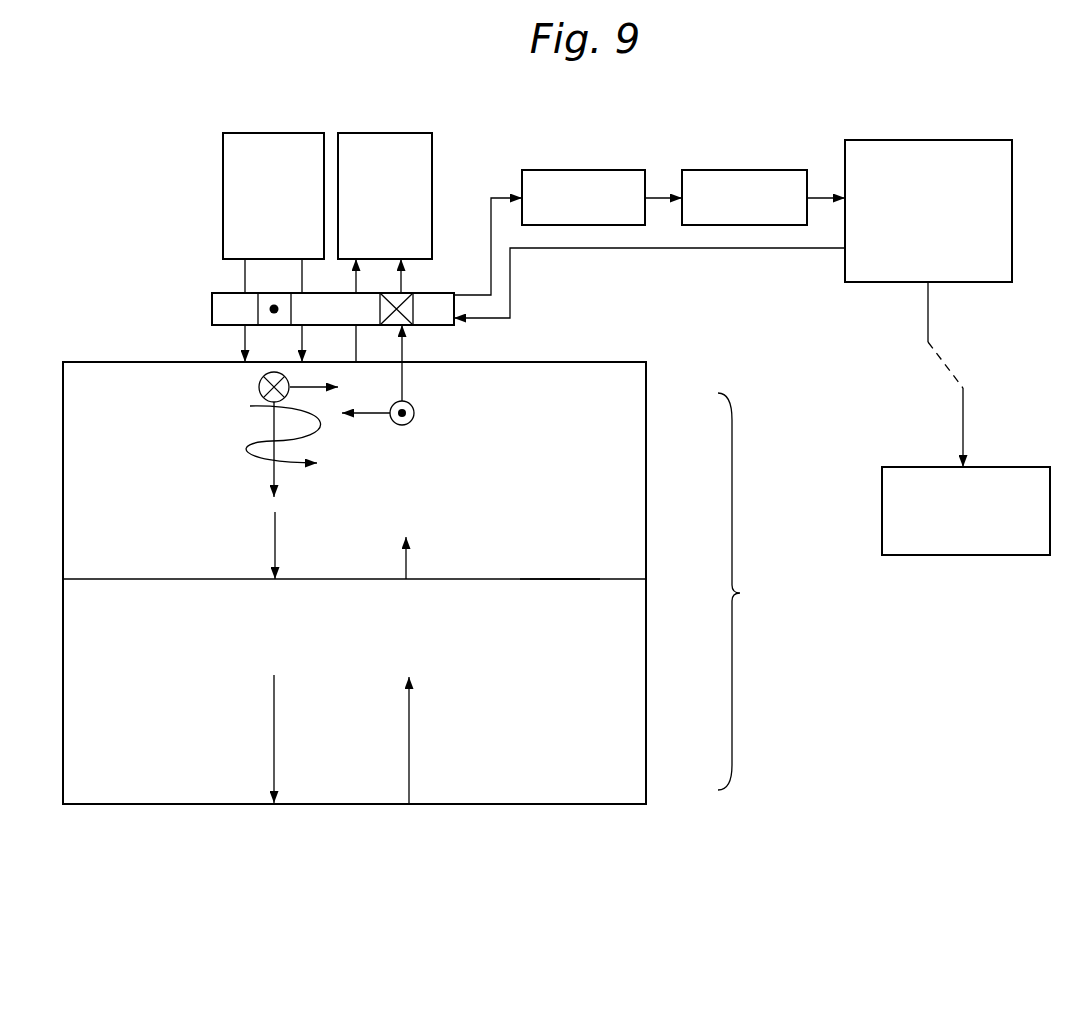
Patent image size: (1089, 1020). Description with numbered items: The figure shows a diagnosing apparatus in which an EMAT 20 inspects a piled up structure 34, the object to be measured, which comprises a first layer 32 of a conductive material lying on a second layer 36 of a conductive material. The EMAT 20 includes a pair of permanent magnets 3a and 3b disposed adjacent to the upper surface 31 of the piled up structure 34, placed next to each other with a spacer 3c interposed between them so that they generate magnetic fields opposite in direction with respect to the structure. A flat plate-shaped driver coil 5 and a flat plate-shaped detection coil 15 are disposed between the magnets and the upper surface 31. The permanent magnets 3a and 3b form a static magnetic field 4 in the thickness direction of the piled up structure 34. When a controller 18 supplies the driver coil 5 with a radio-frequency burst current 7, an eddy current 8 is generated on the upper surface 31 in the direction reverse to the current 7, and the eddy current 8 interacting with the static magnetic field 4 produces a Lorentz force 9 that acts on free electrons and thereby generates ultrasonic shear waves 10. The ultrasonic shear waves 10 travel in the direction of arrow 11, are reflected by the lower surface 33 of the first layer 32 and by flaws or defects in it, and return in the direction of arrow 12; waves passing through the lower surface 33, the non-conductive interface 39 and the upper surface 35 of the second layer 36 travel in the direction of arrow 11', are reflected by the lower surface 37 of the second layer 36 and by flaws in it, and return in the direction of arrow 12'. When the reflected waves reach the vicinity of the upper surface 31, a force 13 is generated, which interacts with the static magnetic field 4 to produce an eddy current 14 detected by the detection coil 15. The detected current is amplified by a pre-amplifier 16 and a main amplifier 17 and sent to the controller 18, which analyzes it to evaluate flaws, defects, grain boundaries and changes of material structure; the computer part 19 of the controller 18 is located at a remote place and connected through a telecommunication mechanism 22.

The permanent magnet 3a is at (280, 133).
The permanent magnet 3b is at (385, 133).
The spacer 3c is at (329, 133).
The static magnetic field 4 is at (259, 449).
The driver coil 5 is at (212, 310).
The radio-frequency burst current 7 is at (286, 316).
The eddy current 8 is at (259, 387).
The Lorentz force 9 is at (325, 385).
The ultrasonic shear waves 10 is at (300, 442).
The arrow 11 is at (295, 543).
The arrow 12 is at (406, 541).
The arrow 11' is at (298, 739).
The arrow 12' is at (433, 740).
The force 13 is at (366, 431).
The eddy current 14 is at (421, 375).
The detection coil 15 is at (413, 293).
The pre-amplifier 16 is at (583, 170).
The main amplifier 17 is at (744, 170).
The controller 18 is at (926, 140).
The computer part 19 is at (1009, 467).
The EMAT 20 is at (465, 182).
The telecommunication mechanism 22 is at (962, 357).
The upper surface 31 is at (608, 362).
The first layer 32 is at (646, 413).
The lower surface 33 is at (594, 579).
The piled up structure 34 is at (748, 591).
The upper surface 35 is at (547, 579).
The second layer 36 is at (633, 697).
The lower surface 37 is at (594, 804).
The non-conductive interface 39 is at (567, 579).